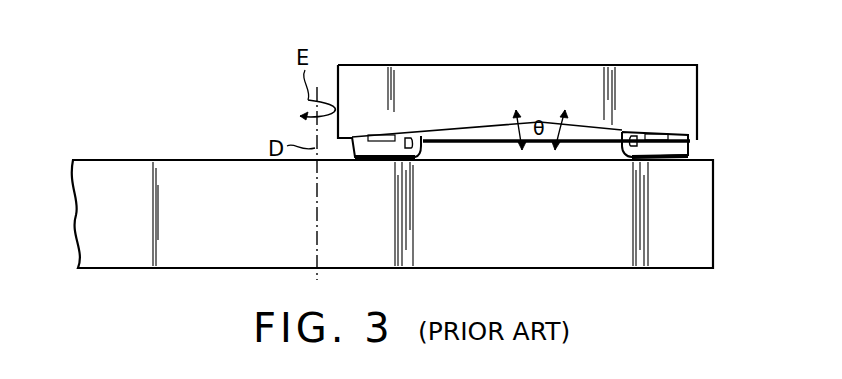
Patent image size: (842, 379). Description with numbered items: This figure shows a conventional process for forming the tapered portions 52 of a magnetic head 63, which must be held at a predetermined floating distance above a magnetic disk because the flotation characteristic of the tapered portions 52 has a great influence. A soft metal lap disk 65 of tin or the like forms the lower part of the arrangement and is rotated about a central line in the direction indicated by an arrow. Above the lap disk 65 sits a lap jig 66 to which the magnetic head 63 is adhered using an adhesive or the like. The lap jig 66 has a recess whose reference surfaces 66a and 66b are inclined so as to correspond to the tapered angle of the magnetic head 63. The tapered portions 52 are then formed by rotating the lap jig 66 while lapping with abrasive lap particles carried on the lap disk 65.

The lap disk 65 is at (103, 178).
The lap jig 66 is at (421, 82).
The reference surface 66a is at (677, 137).
The reference surface 66b is at (358, 135).
The tapered portion 52 is at (365, 162).
The magnetic head 63 is at (403, 148).